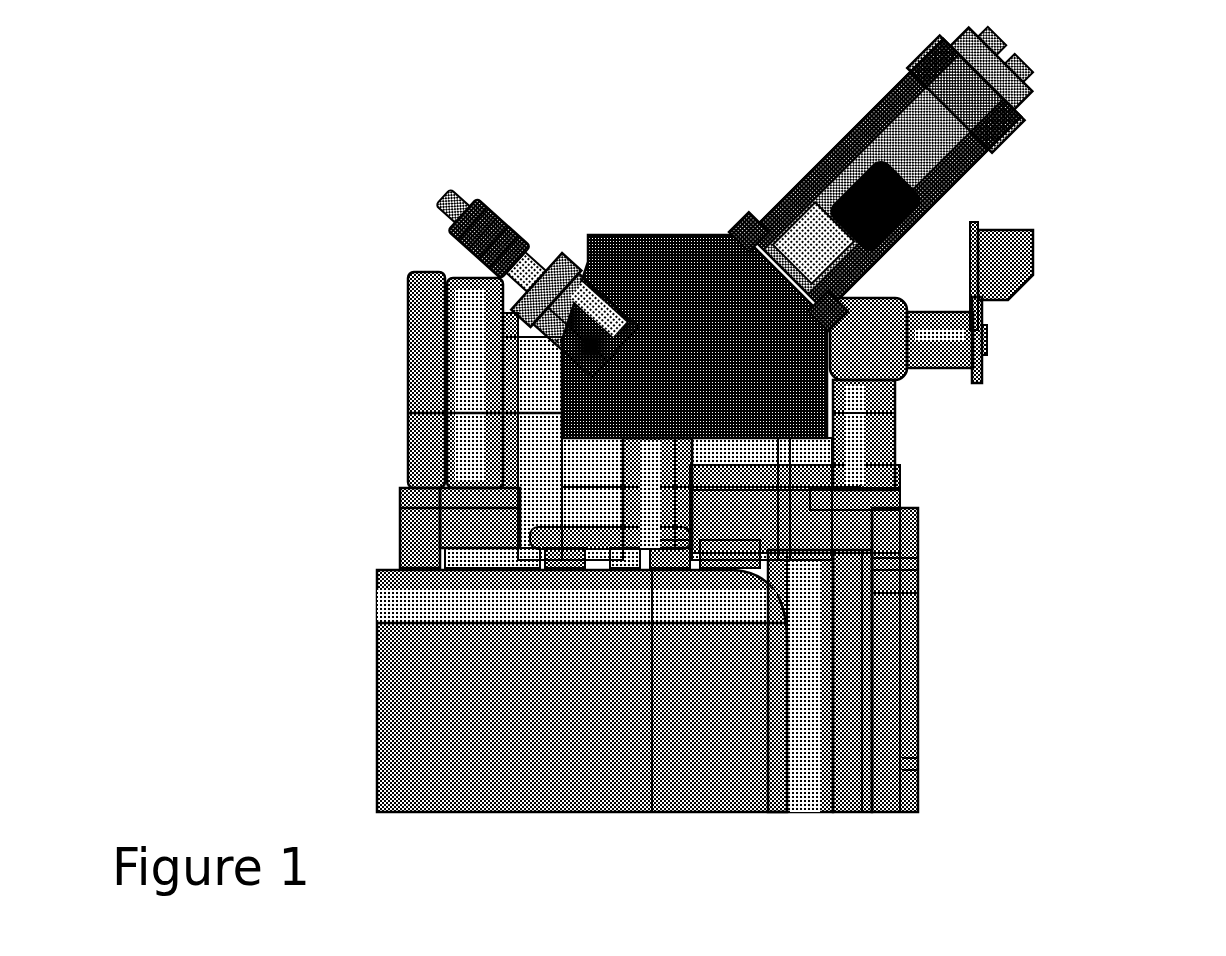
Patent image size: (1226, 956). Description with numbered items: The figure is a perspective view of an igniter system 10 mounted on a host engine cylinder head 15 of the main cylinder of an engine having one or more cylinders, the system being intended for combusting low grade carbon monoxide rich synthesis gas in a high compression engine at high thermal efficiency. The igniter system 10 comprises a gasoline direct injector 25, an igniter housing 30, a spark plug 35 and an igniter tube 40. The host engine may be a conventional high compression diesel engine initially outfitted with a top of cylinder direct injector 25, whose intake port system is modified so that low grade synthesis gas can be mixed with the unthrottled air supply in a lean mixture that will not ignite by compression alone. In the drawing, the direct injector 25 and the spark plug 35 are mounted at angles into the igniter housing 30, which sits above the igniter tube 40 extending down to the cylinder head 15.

The igniter system 10 is at (316, 118).
The host engine cylinder head 15 is at (342, 518).
The direct injector 25 is at (816, 262).
The igniter housing 30 is at (690, 343).
The spark plug 35 is at (527, 268).
The igniter tube 40 is at (662, 485).